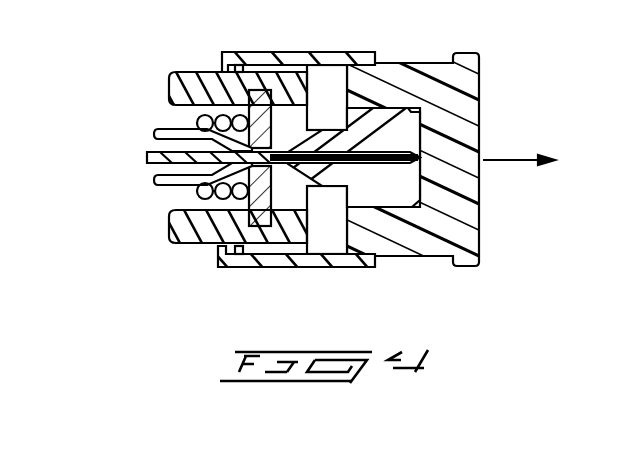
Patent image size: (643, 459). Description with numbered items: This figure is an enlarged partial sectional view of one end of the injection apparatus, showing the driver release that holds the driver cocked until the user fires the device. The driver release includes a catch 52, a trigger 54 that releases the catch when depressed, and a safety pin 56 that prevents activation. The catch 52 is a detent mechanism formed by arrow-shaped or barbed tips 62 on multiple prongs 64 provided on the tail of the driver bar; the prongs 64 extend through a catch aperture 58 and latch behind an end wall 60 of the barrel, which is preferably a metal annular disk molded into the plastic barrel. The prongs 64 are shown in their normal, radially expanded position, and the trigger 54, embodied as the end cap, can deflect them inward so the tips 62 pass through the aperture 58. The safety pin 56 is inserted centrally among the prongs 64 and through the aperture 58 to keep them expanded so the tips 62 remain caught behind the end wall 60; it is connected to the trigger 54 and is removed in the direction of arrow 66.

The catch 52 is at (182, 186).
The trigger 54 is at (352, 268).
The safety pin 56 is at (466, 233).
The catch aperture 58 is at (267, 172).
The end wall 60 is at (252, 92).
The barbed tips 62 is at (307, 128).
The prongs 64 is at (160, 128).
The arrow 66 is at (500, 158).